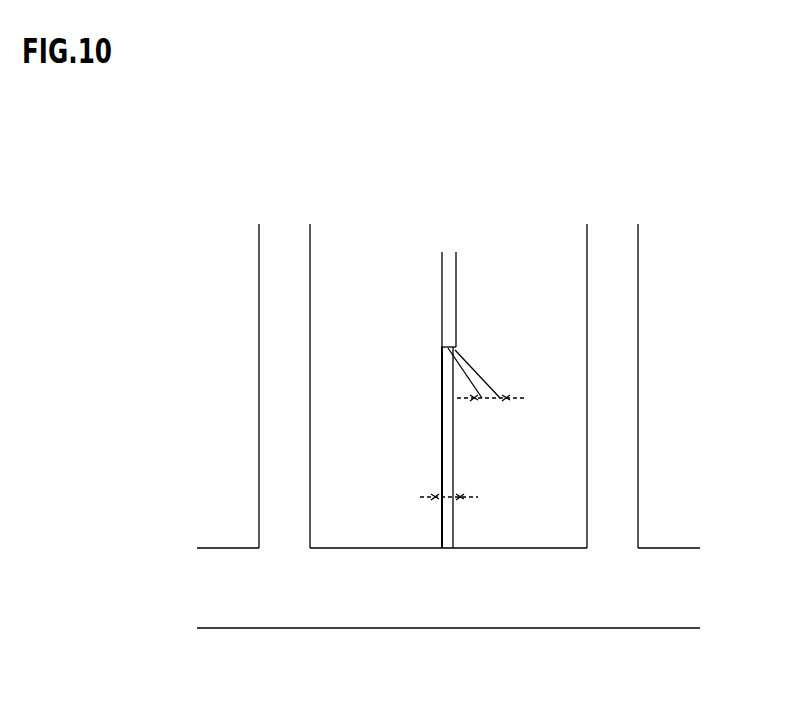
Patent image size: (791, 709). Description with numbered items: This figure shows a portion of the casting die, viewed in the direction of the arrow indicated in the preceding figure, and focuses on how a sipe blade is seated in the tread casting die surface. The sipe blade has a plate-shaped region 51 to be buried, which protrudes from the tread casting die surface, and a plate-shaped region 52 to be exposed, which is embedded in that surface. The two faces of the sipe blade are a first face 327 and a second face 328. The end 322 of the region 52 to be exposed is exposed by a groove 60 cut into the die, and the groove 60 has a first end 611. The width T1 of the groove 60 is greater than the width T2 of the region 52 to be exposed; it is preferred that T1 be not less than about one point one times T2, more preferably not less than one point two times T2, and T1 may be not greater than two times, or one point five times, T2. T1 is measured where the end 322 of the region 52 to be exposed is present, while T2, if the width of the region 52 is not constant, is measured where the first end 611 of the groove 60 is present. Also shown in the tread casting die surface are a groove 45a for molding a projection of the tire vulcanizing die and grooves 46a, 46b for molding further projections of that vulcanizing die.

The groove 46a is at (275, 374).
The groove 46b is at (623, 373).
The groove 60 is at (442, 303).
The end of sipe blade 322 is at (441, 347).
The first end of groove 611 is at (447, 345).
The first face 327 is at (442, 430).
The second face 328 is at (455, 427).
The region to be buried 51 is at (453, 462).
The region to be exposed 52 is at (462, 532).
The groove 45a is at (433, 598).
The width of groove T1 is at (499, 387).
The width of region to be exposed T2 is at (456, 488).